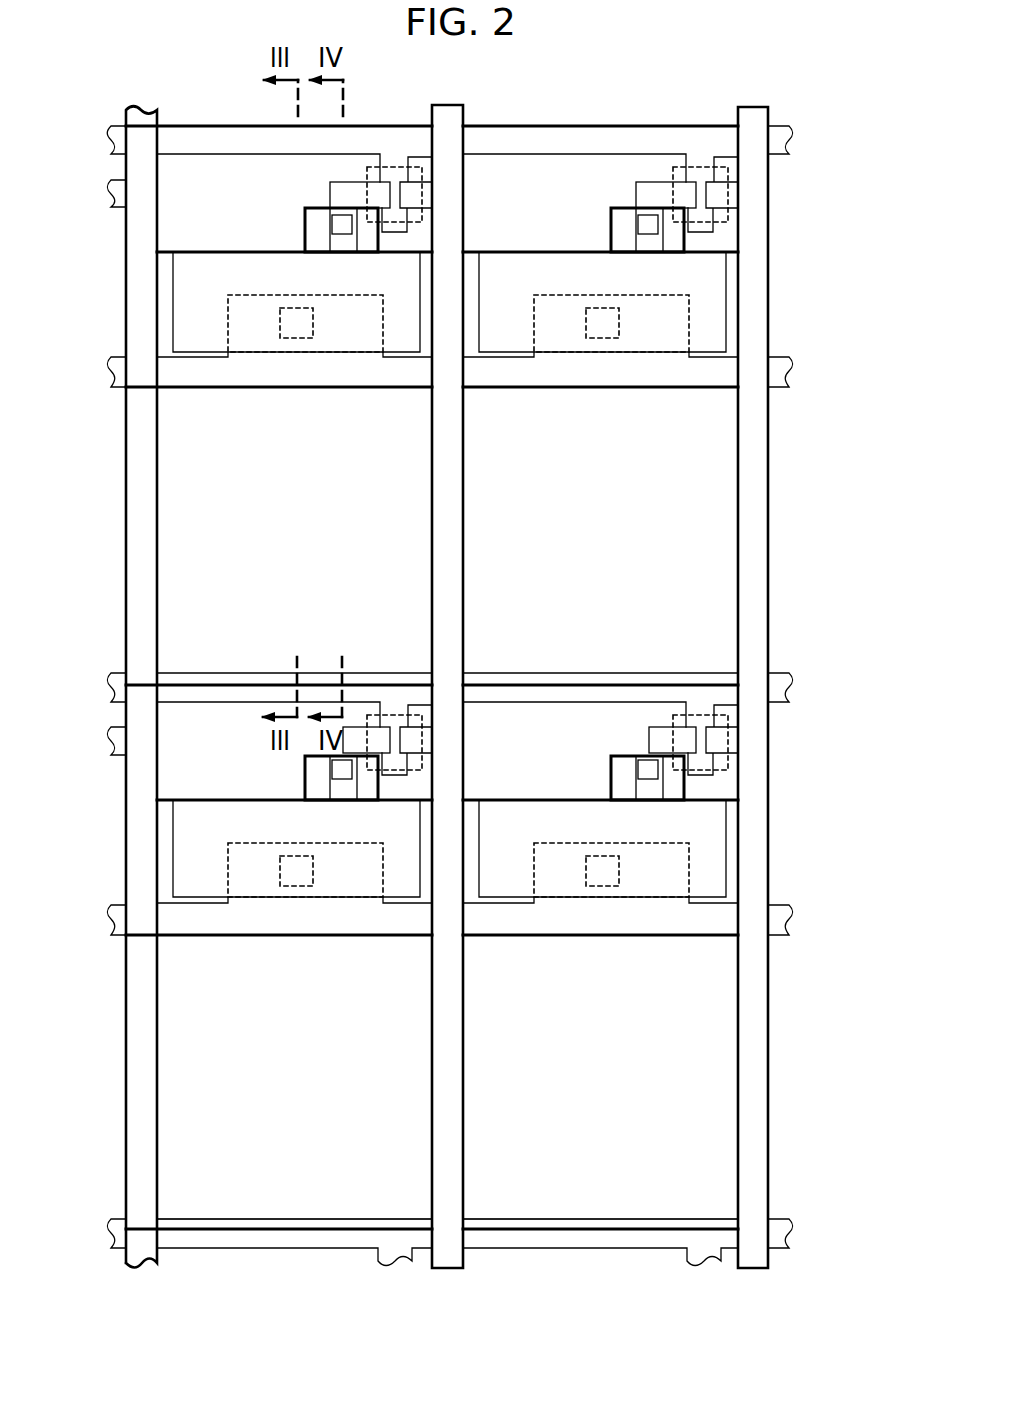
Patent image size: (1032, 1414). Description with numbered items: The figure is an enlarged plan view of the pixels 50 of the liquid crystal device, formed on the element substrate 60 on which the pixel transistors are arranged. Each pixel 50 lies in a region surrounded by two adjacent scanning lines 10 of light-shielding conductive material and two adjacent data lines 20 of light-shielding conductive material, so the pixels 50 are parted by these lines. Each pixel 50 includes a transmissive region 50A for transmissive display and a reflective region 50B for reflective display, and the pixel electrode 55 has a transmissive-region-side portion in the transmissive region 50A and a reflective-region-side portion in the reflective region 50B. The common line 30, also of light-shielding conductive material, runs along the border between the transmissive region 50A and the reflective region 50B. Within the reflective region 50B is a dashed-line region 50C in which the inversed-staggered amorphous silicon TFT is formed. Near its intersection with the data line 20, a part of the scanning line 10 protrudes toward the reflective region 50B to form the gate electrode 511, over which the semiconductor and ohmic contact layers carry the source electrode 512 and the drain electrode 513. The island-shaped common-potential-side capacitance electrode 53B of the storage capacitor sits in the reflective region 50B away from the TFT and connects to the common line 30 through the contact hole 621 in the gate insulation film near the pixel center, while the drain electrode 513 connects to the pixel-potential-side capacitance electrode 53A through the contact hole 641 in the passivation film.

The scanning line 10 is at (793, 141).
The data line 20 is at (455, 1270).
The common line 30 is at (793, 378).
The pixel 50 is at (227, 182).
The transmissive region 50A is at (167, 510).
The reflective region 50B is at (167, 230).
The region in which the TFT is formed 50C is at (397, 167).
The pixel-potential-side capacitance electrode 53A is at (194, 595).
The common-potential-side capacitance electrode 53B is at (194, 298).
The pixel electrode 55 is at (193, 447).
The element substrate 60 is at (505, 90).
The gate electrode 511 is at (381, 232).
The source electrode 512 is at (396, 240).
The drain electrode 513 is at (372, 232).
The contact hole 621 is at (305, 325).
The contact hole 641 is at (334, 226).